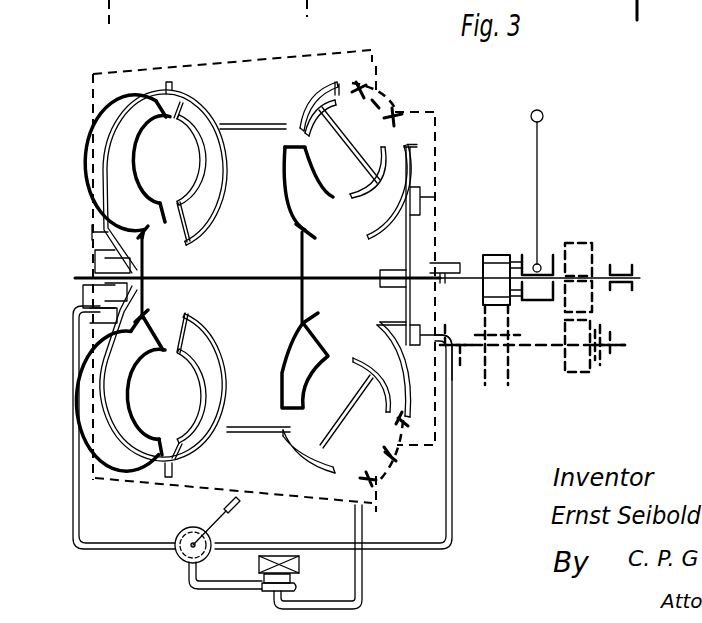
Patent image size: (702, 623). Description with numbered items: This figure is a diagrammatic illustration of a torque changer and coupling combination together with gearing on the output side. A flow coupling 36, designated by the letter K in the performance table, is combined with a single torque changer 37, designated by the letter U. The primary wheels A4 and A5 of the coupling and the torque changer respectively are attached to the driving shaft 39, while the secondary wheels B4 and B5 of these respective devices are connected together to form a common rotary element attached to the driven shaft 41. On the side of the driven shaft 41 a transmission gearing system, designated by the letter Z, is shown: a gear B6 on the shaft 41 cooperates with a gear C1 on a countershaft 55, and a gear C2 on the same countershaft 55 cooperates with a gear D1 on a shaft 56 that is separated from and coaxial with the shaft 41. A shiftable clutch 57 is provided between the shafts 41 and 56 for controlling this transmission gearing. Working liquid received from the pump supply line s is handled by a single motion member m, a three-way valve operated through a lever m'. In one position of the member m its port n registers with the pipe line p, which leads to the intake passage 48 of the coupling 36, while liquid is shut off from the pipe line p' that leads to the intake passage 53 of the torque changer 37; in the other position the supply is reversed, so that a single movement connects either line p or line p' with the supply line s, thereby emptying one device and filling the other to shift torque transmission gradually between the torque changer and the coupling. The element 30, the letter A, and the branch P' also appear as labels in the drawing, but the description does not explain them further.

The shaft 30 is at (608, 10).
The flow coupling 36 is at (111, 108).
The torque changer 37 is at (394, 96).
The driving shaft 39 is at (242, 285).
The driven shaft 41 is at (470, 273).
The intake passage 48 is at (110, 323).
The intake passage 53 is at (381, 346).
The countershaft 55 is at (532, 358).
The shaft 56 is at (636, 276).
The shiftable clutch 57 is at (540, 255).
The vertical shaft A is at (186, 283).
The primary wheel of the coupling A4 is at (142, 120).
The primary wheel of the torque changer A5 is at (292, 173).
The secondary wheel of the coupling B4 is at (210, 140).
The secondary wheel of the torque changer B5 is at (386, 207).
The gear B6 is at (497, 250).
The gear C1 is at (492, 363).
The gear C2 is at (576, 361).
The gear D1 is at (580, 258).
The coupling K is at (155, 162).
The torque changer U is at (327, 158).
The transmission gear Z is at (536, 325).
The pipe branch P' is at (457, 369).
The pipe line p is at (235, 427).
The pipe line p' is at (306, 557).
The single motion member m is at (174, 537).
The lever m' is at (229, 521).
The port n is at (178, 557).
The pump supply line s is at (207, 588).